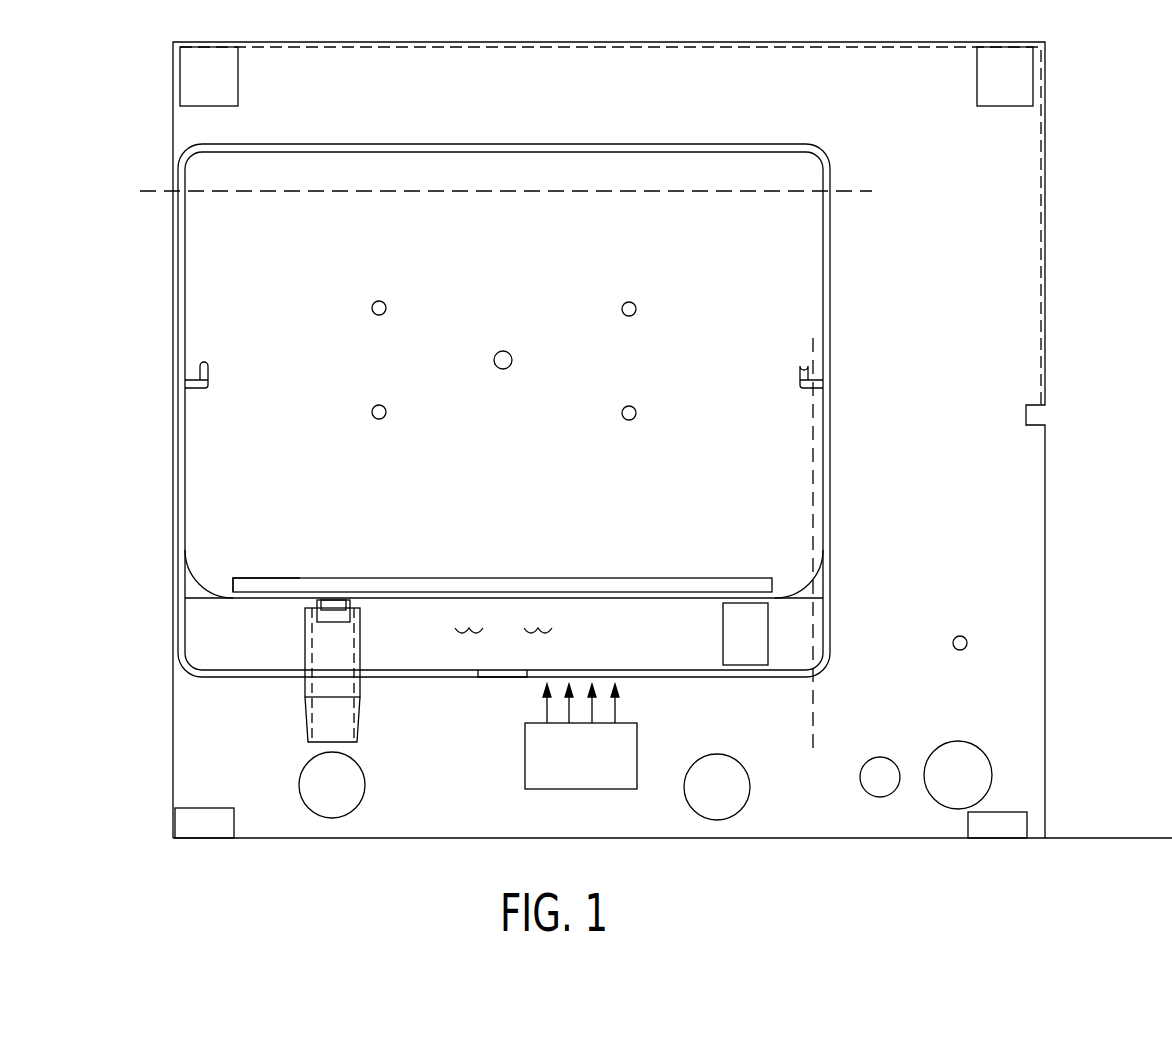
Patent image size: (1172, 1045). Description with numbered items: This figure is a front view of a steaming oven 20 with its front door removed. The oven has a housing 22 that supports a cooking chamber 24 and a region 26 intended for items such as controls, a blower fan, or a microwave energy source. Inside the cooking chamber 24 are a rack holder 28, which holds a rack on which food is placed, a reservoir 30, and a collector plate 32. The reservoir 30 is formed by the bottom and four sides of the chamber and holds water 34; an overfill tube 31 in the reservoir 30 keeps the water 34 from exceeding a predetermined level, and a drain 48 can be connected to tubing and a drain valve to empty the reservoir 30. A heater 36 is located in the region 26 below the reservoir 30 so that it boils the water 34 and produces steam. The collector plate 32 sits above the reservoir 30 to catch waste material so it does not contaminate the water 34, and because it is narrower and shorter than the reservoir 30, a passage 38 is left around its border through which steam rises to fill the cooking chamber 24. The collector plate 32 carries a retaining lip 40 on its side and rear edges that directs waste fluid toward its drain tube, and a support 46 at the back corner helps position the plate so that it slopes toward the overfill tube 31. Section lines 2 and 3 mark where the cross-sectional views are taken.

The section line 2- 2 is at (824, 407).
The section line 3- 3 is at (149, 182).
The steaming oven 20 is at (1062, 126).
The housing 22 is at (1045, 540).
The cooking chamber 24 is at (699, 309).
The region 26 is at (945, 476).
The rack holder 28 is at (212, 374).
The reservoir 30 is at (664, 678).
The overfill tube 31 is at (360, 619).
The collector plate 32 is at (615, 578).
The water 34 is at (514, 645).
The heater 36 is at (572, 790).
The passage 38 is at (199, 558).
The retaining lip 40 is at (258, 578).
The support 46 is at (723, 636).
The drain 48 is at (498, 678).